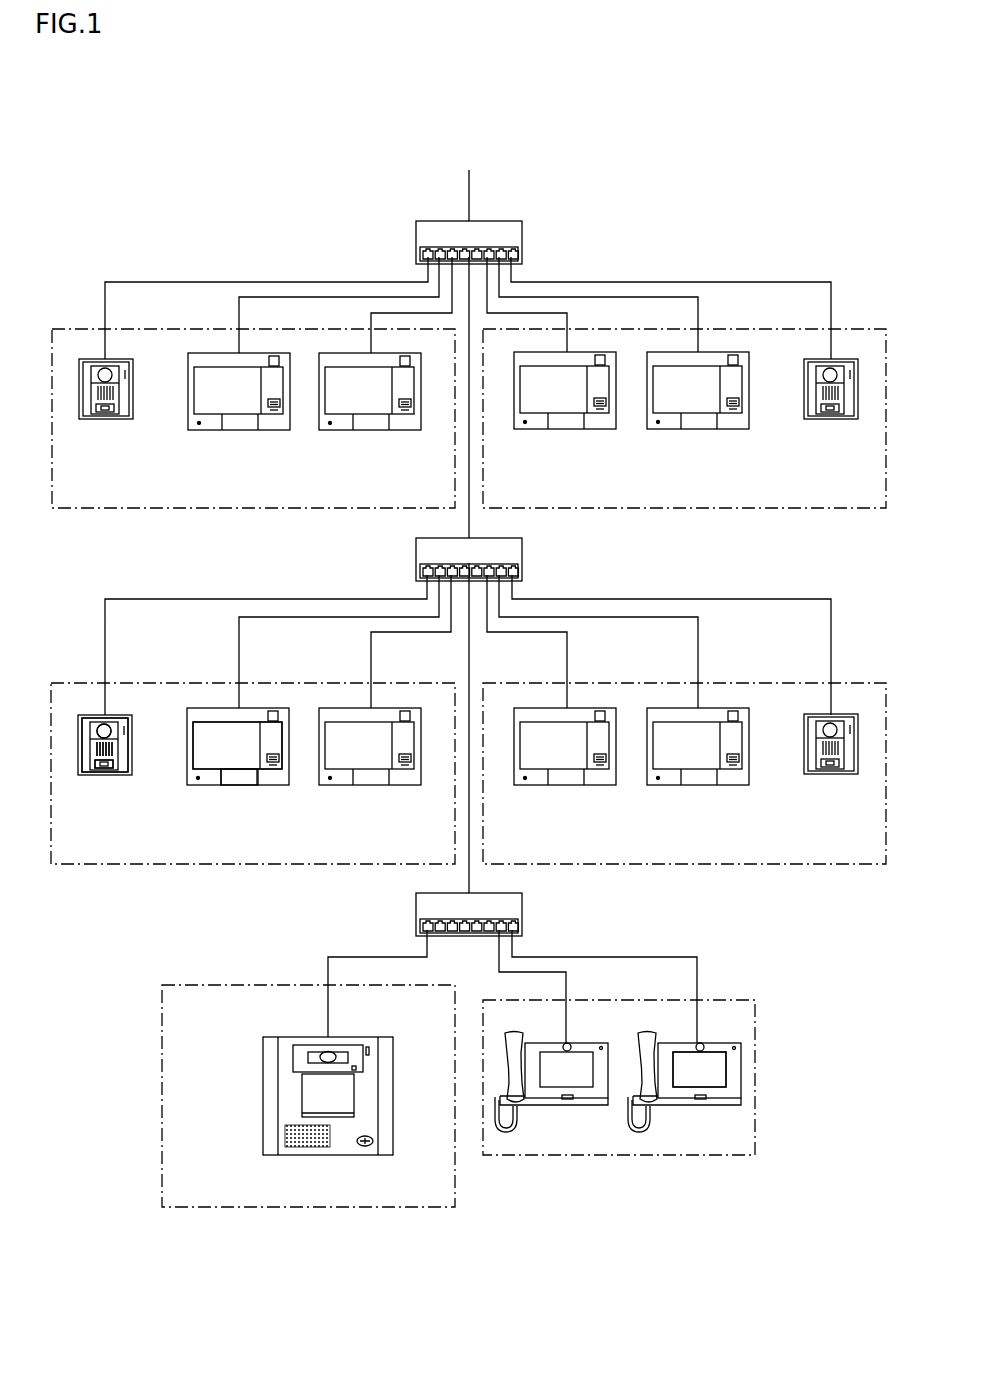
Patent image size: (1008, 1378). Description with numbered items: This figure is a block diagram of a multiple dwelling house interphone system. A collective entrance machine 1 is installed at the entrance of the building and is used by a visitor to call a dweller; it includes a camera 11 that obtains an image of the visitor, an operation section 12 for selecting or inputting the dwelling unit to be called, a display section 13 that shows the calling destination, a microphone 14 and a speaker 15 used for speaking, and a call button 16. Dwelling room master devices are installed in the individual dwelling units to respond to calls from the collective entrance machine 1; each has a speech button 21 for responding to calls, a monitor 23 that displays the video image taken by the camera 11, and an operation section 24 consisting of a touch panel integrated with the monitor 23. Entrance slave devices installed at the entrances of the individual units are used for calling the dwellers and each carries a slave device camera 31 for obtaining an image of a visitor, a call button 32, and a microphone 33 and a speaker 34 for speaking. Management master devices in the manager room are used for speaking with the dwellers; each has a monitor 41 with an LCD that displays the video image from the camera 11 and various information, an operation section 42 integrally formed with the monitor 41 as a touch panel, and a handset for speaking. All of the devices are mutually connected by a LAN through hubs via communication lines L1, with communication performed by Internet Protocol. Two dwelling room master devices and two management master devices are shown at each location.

The collective entrance machine 1 is at (306, 1096).
The camera 11 is at (323, 1052).
The operation section 12 is at (261, 1078).
The display section 13 is at (307, 1092).
The microphone 14 is at (368, 1047).
The speaker 15 is at (313, 1150).
The call button 16 is at (365, 1148).
The speech button 21 is at (242, 780).
The monitor 23 is at (271, 705).
The operation section 24 is at (235, 737).
The slave device camera 31 is at (102, 727).
The call button 32 is at (108, 766).
The microphone 33 is at (123, 732).
The speaker 34 is at (115, 747).
The monitor 41 is at (759, 1069).
The operation section 42 is at (713, 1070).
The communication line L1 is at (298, 282).